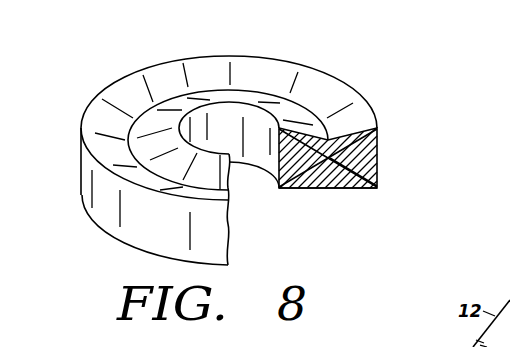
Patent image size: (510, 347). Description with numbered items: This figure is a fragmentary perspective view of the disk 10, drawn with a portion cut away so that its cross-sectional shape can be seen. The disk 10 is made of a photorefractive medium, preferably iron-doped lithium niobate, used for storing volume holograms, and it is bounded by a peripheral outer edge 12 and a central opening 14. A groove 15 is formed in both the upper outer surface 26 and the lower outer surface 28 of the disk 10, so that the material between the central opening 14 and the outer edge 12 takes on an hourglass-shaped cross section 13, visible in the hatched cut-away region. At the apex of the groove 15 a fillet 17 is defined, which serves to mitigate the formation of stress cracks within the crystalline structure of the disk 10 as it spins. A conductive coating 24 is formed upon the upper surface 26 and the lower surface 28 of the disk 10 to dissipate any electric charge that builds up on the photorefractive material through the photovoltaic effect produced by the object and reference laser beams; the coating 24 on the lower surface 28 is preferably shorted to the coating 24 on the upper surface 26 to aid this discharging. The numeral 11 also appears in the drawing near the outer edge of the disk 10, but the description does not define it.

The disk 10 is at (398, 100).
The ring body 11 is at (332, 82).
The peripheral outer edge 12 is at (98, 228).
The hourglass-shaped cross section 13 is at (368, 174).
The central opening 14 is at (263, 164).
The groove 15 is at (127, 76).
The fillet 17 is at (342, 170).
The conductive coating 24 is at (291, 189).
The upper outer surface 26 is at (93, 120).
The lower outer surface 28 is at (366, 189).